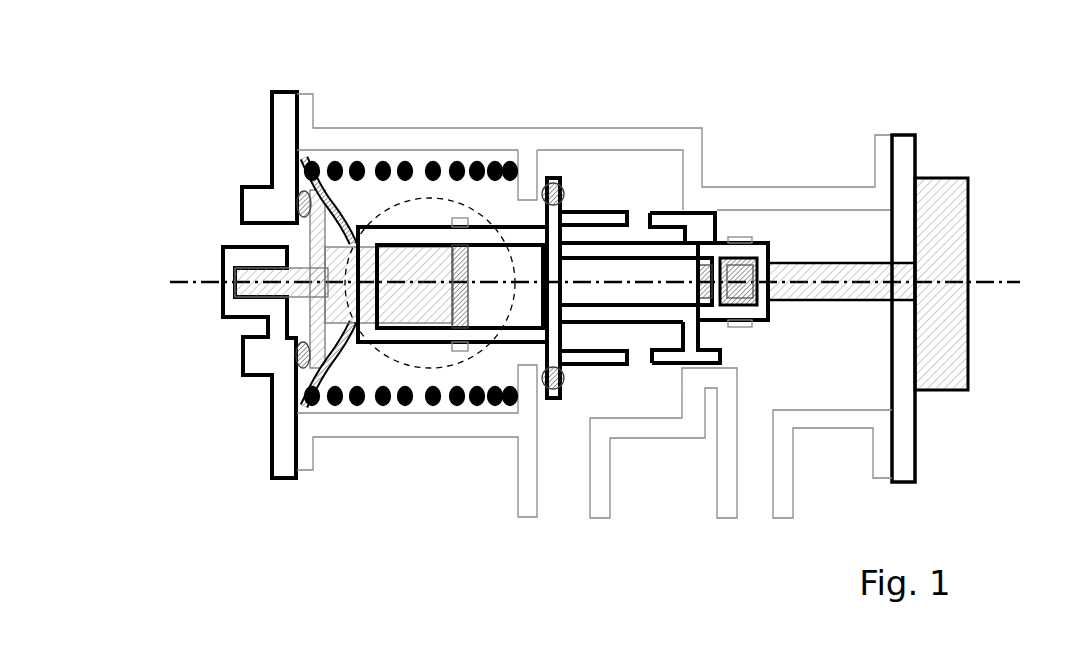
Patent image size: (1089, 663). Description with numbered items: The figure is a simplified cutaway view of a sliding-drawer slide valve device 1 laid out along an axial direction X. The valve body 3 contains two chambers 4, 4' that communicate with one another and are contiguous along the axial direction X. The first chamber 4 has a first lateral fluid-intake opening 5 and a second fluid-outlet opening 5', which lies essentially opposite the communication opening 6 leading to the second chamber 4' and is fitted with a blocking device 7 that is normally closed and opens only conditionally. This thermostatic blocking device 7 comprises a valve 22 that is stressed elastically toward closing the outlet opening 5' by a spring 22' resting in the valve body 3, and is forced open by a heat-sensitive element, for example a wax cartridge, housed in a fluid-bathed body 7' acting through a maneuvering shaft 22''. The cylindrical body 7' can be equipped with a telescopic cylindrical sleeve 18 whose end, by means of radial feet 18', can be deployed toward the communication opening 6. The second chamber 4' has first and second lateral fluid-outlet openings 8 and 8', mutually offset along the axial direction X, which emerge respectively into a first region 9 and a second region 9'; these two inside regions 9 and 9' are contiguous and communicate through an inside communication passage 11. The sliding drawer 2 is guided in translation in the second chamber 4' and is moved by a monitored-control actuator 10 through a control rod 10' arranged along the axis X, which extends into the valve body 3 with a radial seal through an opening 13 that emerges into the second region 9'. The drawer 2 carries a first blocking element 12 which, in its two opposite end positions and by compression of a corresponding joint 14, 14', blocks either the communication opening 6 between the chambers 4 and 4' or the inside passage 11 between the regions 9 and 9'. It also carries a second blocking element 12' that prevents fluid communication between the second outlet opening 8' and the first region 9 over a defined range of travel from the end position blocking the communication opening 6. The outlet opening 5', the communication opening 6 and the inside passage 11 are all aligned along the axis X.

The sliding-drawer slide valve device 1 is at (492, 573).
The sliding drawer 2 is at (605, 243).
The valve body 3 is at (583, 140).
The first chamber 4 is at (411, 218).
The second chamber 4' is at (706, 186).
The first lateral fluid-intake opening 5 is at (452, 198).
The second fluid-outlet opening 5' is at (221, 233).
The communication opening 6 is at (492, 375).
The blocking device 7 is at (328, 153).
The body 7' is at (260, 412).
The first lateral fluid-outlet opening 8 is at (558, 493).
The second lateral fluid-outlet opening 8' is at (753, 530).
The first region 9 is at (637, 136).
The second region 9' is at (804, 147).
The monitored-control actuator 10 is at (960, 315).
The control rod 10' is at (873, 182).
The inside communication passage 11 is at (716, 238).
The first blocking element 12 is at (648, 451).
The second blocking element 12' is at (780, 443).
The opening 13 is at (935, 373).
The joint 14 is at (488, 364).
The joint 14' is at (603, 338).
The telescopic cylindrical sleeve 18 is at (386, 372).
The radial feet 18' is at (382, 431).
The valve 22 is at (232, 285).
The spring 22' is at (407, 96).
The maneuvering shaft 22'' is at (197, 314).
The axial direction X is at (1003, 277).